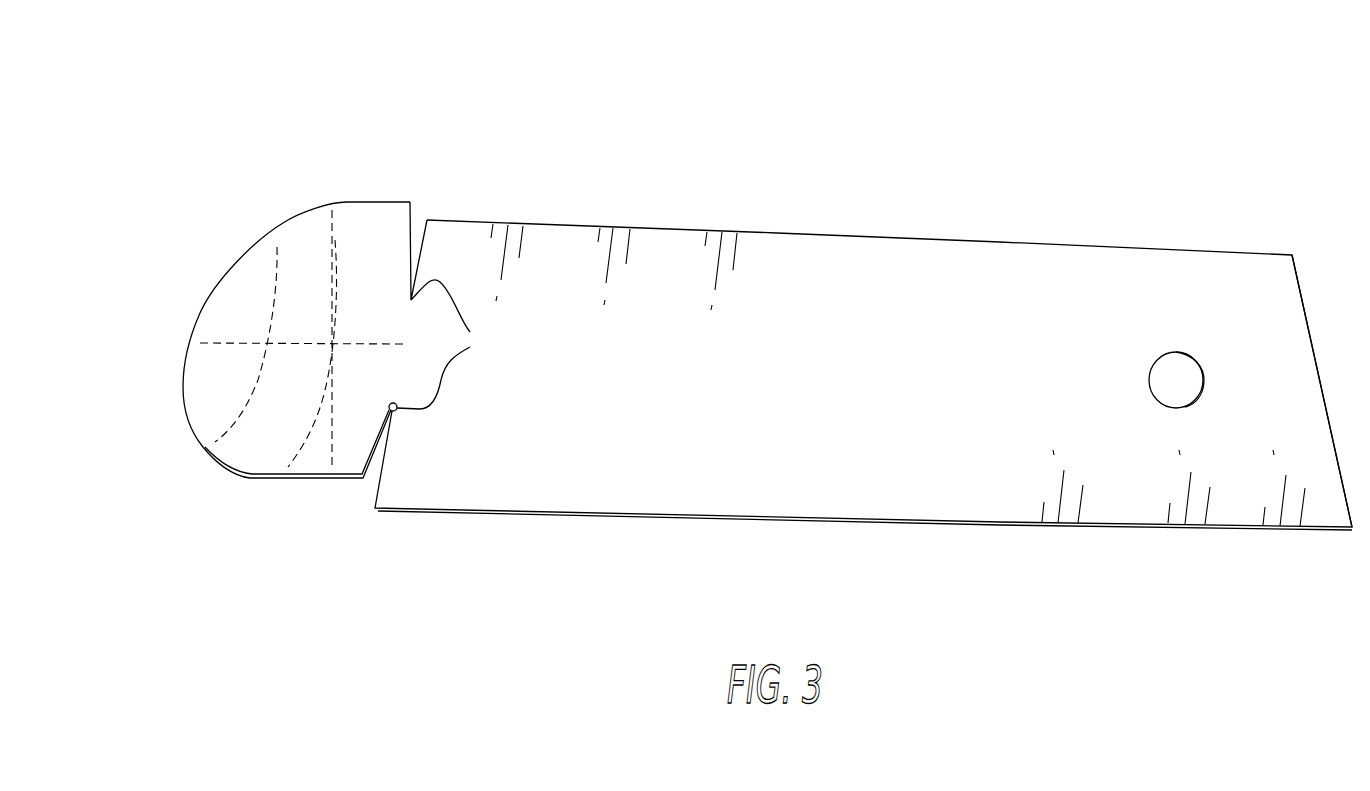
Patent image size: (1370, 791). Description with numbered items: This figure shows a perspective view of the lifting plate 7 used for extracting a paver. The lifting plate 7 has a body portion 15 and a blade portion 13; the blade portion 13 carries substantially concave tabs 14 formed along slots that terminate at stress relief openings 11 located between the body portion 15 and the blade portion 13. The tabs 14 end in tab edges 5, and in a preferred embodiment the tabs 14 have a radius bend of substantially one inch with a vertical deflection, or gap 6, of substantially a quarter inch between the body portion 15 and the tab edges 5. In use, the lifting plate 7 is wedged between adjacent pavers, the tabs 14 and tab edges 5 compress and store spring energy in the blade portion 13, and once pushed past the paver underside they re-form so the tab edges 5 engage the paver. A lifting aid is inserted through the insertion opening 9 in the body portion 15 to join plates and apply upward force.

The lifting plate 7 is at (226, 132).
The blade portion 13 is at (213, 292).
The tabs 14 is at (380, 228).
The vertical deflection (gap) 6 is at (417, 217).
The stress relief openings 11 is at (448, 344).
The tab edges 5 is at (377, 460).
The insertion openings 9 is at (1180, 380).
The body portion 15 is at (1255, 255).